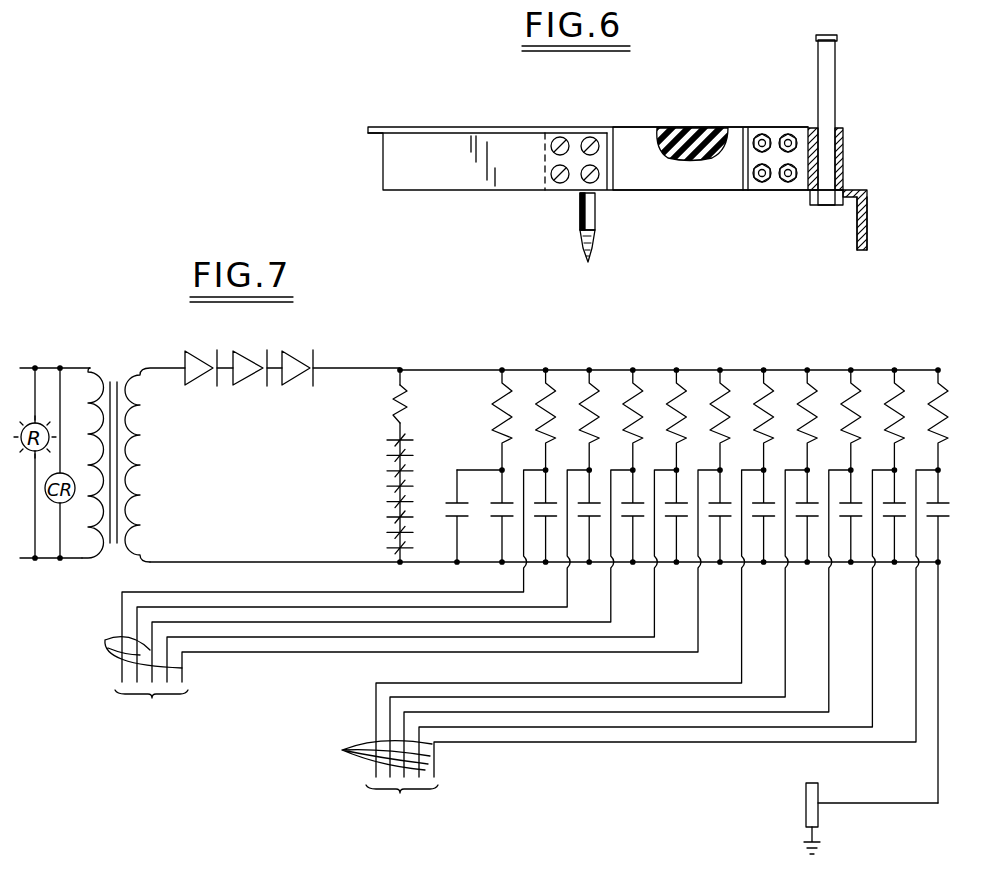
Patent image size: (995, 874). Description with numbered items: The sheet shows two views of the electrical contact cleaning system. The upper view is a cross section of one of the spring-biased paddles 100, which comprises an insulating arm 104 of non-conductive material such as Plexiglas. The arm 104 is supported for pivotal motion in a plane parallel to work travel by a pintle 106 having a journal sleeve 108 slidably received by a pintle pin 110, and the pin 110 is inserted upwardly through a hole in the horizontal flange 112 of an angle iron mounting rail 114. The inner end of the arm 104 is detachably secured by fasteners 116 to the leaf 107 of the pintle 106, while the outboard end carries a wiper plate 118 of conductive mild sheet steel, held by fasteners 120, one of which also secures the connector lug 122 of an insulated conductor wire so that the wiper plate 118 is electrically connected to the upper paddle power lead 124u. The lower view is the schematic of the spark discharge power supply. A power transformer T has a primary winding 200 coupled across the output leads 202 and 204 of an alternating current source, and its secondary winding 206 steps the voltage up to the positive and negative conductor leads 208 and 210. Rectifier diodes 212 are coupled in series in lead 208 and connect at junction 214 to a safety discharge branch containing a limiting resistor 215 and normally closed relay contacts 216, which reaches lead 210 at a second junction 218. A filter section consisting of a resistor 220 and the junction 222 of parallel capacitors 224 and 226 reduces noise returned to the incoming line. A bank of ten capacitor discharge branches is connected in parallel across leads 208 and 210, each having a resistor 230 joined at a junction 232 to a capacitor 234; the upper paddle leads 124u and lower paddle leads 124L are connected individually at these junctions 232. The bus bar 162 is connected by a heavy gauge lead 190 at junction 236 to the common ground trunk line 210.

In FIG. 6, the paddle 100 is at (654, 128).
In FIG. 6, the insulating arm 104 is at (735, 128).
In FIG. 6, the pintle 106 is at (843, 127).
In FIG. 6, the leaf 107 is at (745, 170).
In FIG. 6, the journal sleeve 108 is at (845, 150).
In FIG. 6, the pintle pin 110 is at (838, 64).
In FIG. 6, the horizontal flange 112 is at (862, 188).
In FIG. 6, the angle iron mounting rail 114 is at (857, 243).
In FIG. 6, the fasteners 116 is at (770, 135).
In FIG. 6, the wiper plate 118 is at (465, 128).
In FIG. 6, the fasteners 120 is at (589, 137).
In FIG. 6, the connector lug 122 is at (578, 197).
In FIG. 6, the upper paddle power lead 124u is at (582, 243).
In FIG. 7, the upper paddle power lead 124u is at (106, 642).
In FIG. 7, the lower paddle power lead 124L is at (344, 750).
In FIG. 7, the bus bar 162 is at (805, 803).
In FIG. 7, the lead 190 is at (873, 802).
In FIG. 7, the primary winding 200 is at (92, 397).
In FIG. 7, the output lead 202 is at (40, 366).
In FIG. 7, the output lead 204 is at (52, 562).
In FIG. 7, the secondary winding 206 is at (141, 433).
In FIG. 7, the positive conductor lead 208 is at (160, 366).
In FIG. 7, the negative conductor lead 210 is at (184, 560).
In FIG. 7, the rectifier diodes 212 is at (290, 350).
In FIG. 7, the junction 214 is at (402, 366).
In FIG. 7, the limiting resistor 215 is at (398, 396).
In FIG. 7, the relay contacts 216 is at (392, 530).
In FIG. 7, the second junction 218 is at (398, 565).
In FIG. 7, the resistor 220 is at (503, 415).
In FIG. 7, the junction 222 is at (502, 466).
In FIG. 7, the capacitor 224 is at (448, 522).
In FIG. 7, the capacitor 226 is at (495, 522).
In FIG. 7, the resistor 230 is at (552, 400).
In FIG. 7, the junction 232 is at (545, 468).
In FIG. 7, the capacitor 234 is at (540, 566).
In FIG. 7, the junction 236 is at (935, 566).
In FIG. 7, the power transformer T is at (122, 357).